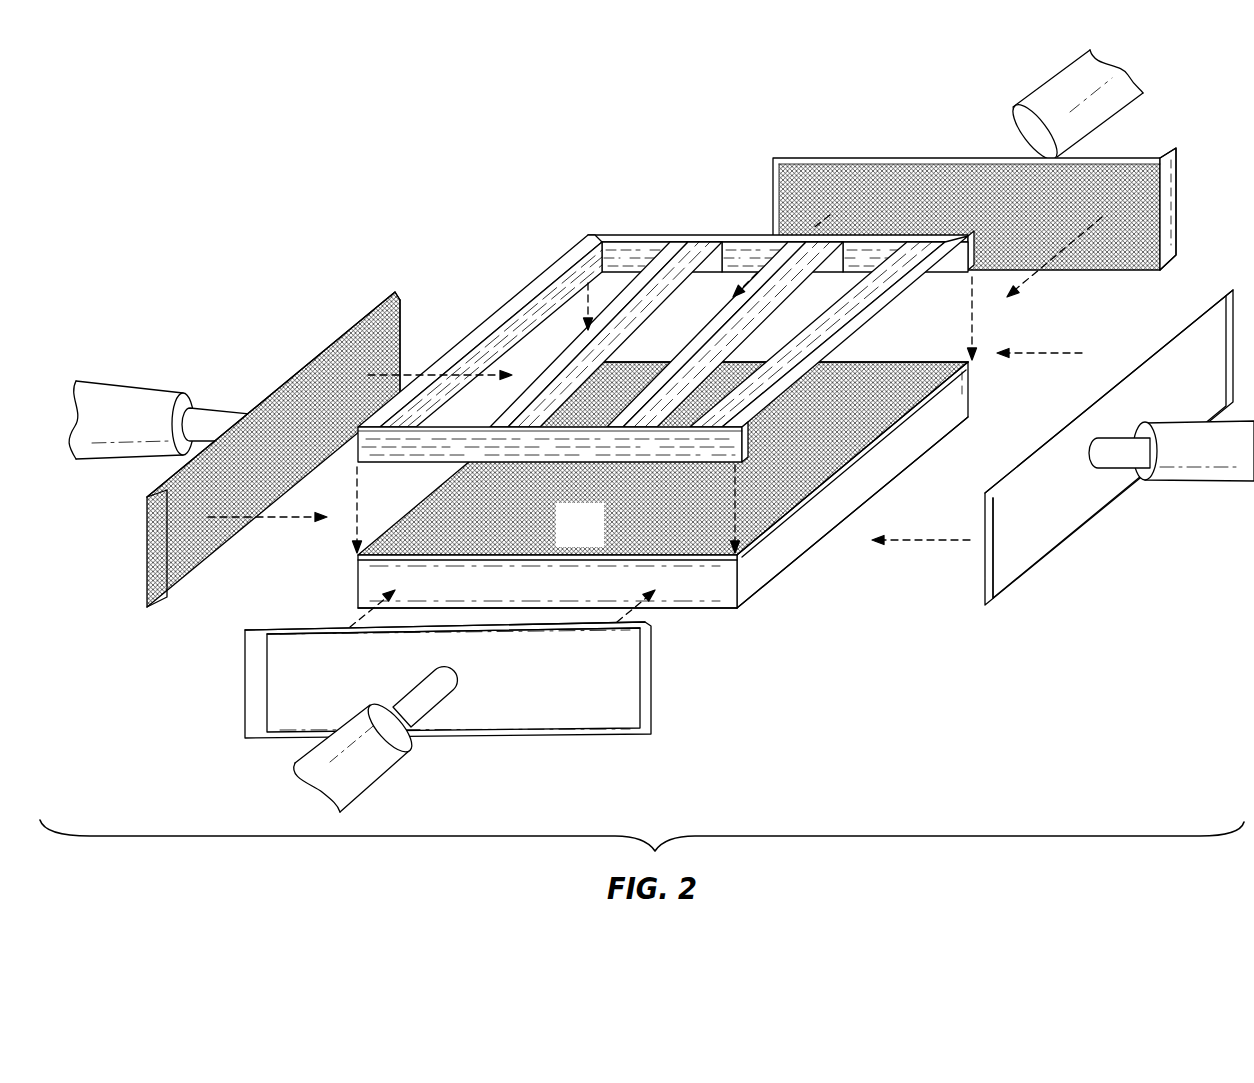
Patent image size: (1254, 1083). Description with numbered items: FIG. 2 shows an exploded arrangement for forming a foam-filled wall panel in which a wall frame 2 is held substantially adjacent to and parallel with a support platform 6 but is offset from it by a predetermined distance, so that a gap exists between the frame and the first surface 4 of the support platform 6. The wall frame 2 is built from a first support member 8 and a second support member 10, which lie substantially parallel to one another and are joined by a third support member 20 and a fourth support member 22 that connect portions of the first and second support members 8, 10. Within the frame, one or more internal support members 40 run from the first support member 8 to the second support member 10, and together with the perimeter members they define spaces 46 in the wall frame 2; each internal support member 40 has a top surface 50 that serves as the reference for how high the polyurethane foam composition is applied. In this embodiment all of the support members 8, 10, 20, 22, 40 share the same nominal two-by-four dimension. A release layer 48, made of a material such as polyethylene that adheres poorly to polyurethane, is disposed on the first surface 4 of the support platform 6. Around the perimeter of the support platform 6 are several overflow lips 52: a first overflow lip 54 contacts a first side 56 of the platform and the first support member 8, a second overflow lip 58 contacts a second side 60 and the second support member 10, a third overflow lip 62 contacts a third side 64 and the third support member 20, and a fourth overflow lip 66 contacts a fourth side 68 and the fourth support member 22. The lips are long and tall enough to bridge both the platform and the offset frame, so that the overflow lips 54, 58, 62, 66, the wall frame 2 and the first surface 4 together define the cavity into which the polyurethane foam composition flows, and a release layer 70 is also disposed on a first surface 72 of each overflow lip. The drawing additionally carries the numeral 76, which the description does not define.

The wall frame 2 is at (681, 211).
The first surface 4 is at (930, 440).
The support platform 6 is at (782, 575).
The first support member 8 is at (350, 460).
The second support member 10 is at (666, 290).
The third support member 20 is at (972, 318).
The fourth support member 22 is at (500, 307).
The internal support member 40 is at (648, 330).
The spaces 46 is at (621, 250).
The release layer 48 is at (665, 492).
The top surface 50 is at (580, 346).
The overflow lips 52 is at (690, 448).
The first overflow lip 54 is at (650, 685).
The first side 56 is at (683, 613).
The second overflow lip 58 is at (923, 158).
The second side 60 is at (927, 358).
The third overflow lip 62 is at (1100, 515).
The third side 64 is at (883, 490).
The fourth overflow lip 66 is at (277, 388).
The fourth side 68 is at (427, 512).
The release layer 70 is at (1180, 218).
The first surface 72 is at (813, 165).
The frame rail 76 is at (663, 318).